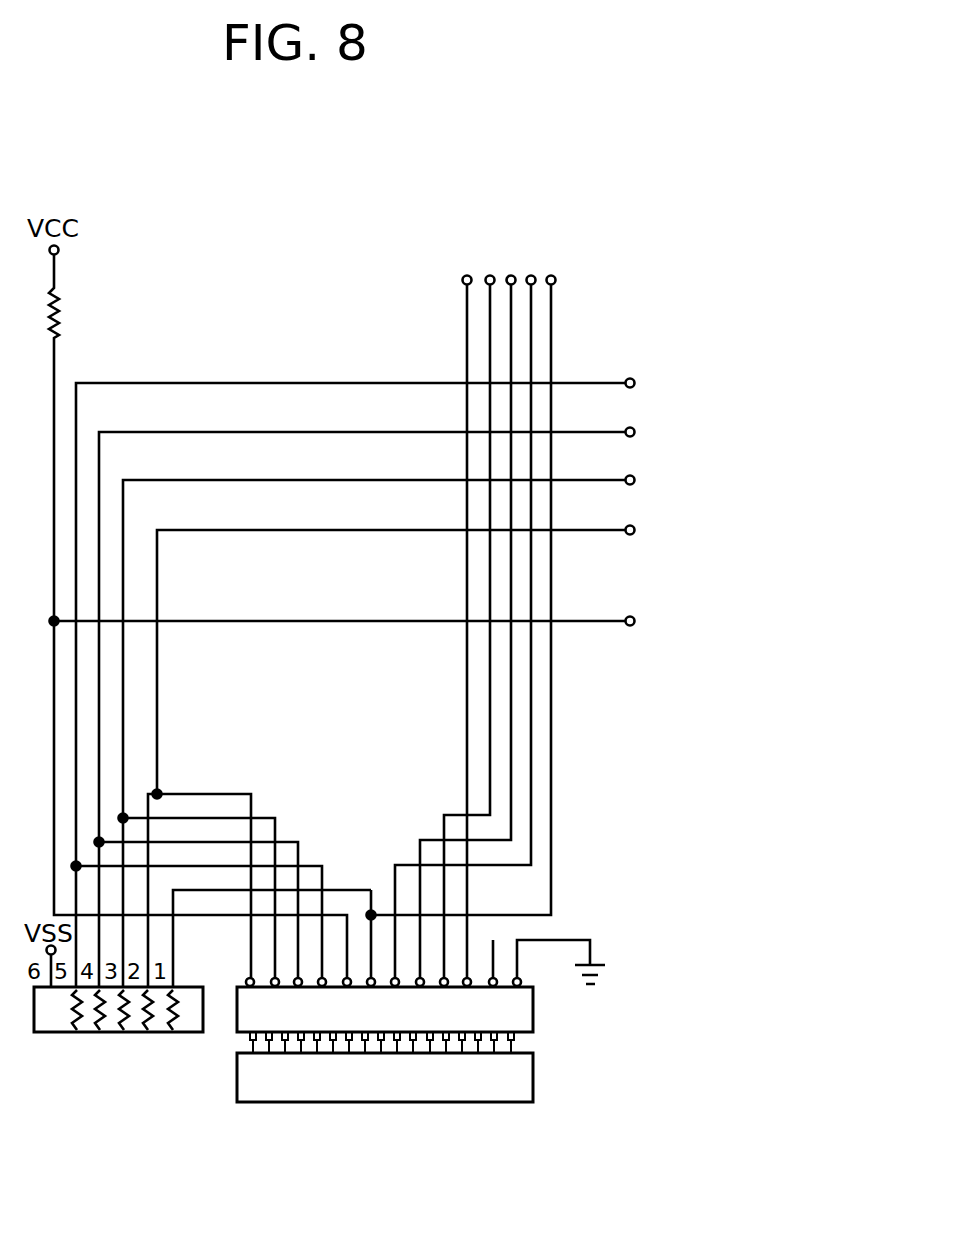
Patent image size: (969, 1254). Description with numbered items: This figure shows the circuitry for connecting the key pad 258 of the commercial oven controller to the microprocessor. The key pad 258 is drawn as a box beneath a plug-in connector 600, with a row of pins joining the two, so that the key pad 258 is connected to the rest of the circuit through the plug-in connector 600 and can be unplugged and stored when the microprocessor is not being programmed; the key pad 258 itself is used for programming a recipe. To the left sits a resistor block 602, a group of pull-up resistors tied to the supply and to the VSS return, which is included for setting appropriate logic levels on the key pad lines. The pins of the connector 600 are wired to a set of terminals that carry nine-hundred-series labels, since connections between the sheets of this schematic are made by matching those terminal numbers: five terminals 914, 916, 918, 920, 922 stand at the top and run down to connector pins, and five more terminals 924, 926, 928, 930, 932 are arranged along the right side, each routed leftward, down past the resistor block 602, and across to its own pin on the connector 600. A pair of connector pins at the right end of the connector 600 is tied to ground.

The keypad column scan line 914 is at (463, 276).
The keypad column scan line 916 is at (488, 276).
The keypad column scan line 918 is at (511, 276).
The keypad column scan line 920 is at (531, 276).
The keypad column scan line 922 is at (553, 276).
The keypad row input line 924 is at (386, 677).
The keypad row input line 926 is at (397, 702).
The keypad row input line 928 is at (409, 726).
The keypad row input line 930 is at (424, 751).
The keypad row input line 932 is at (375, 621).
The plug-in connector 600 is at (534, 1017).
The resistor block 602 is at (203, 1020).
The key pad 258 is at (534, 1080).